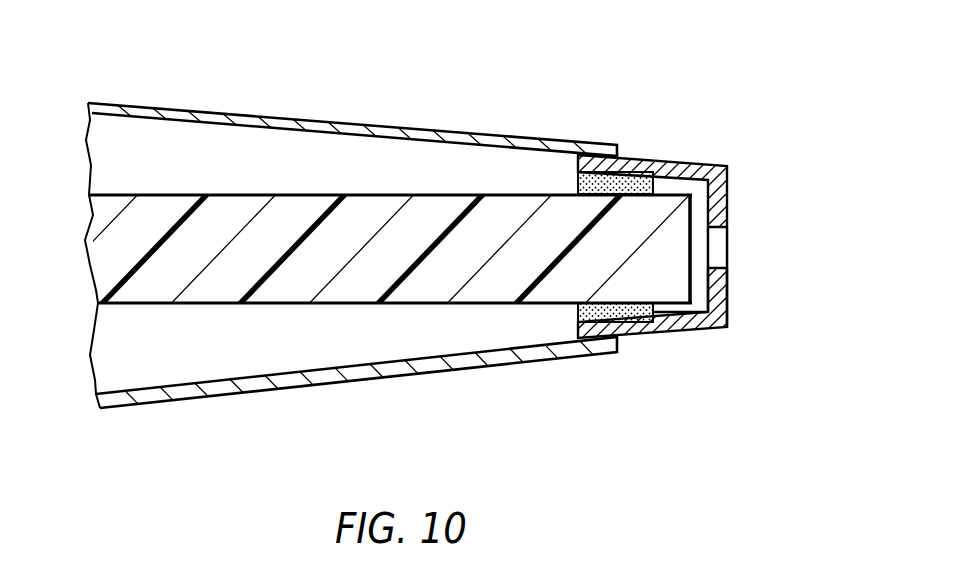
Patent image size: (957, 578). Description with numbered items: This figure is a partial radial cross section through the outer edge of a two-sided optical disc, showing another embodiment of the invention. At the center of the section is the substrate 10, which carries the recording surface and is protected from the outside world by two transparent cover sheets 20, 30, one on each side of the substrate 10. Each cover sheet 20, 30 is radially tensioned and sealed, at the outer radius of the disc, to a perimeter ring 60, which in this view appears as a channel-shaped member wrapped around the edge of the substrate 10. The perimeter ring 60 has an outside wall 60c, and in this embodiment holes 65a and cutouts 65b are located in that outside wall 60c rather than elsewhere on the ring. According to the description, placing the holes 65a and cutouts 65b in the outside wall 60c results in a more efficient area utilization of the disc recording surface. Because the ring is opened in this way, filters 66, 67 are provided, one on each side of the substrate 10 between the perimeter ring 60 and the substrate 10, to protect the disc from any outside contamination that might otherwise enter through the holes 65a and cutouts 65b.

The substrate 10 is at (105, 263).
The transparent cover sheet 20 is at (252, 116).
The transparent cover sheet 30 is at (270, 392).
The perimeter ring 60 is at (724, 166).
The outside wall 60c is at (720, 303).
The holes 65a is at (720, 243).
The cutouts 65b is at (682, 310).
The filter 66 is at (578, 175).
The filter 67 is at (583, 319).